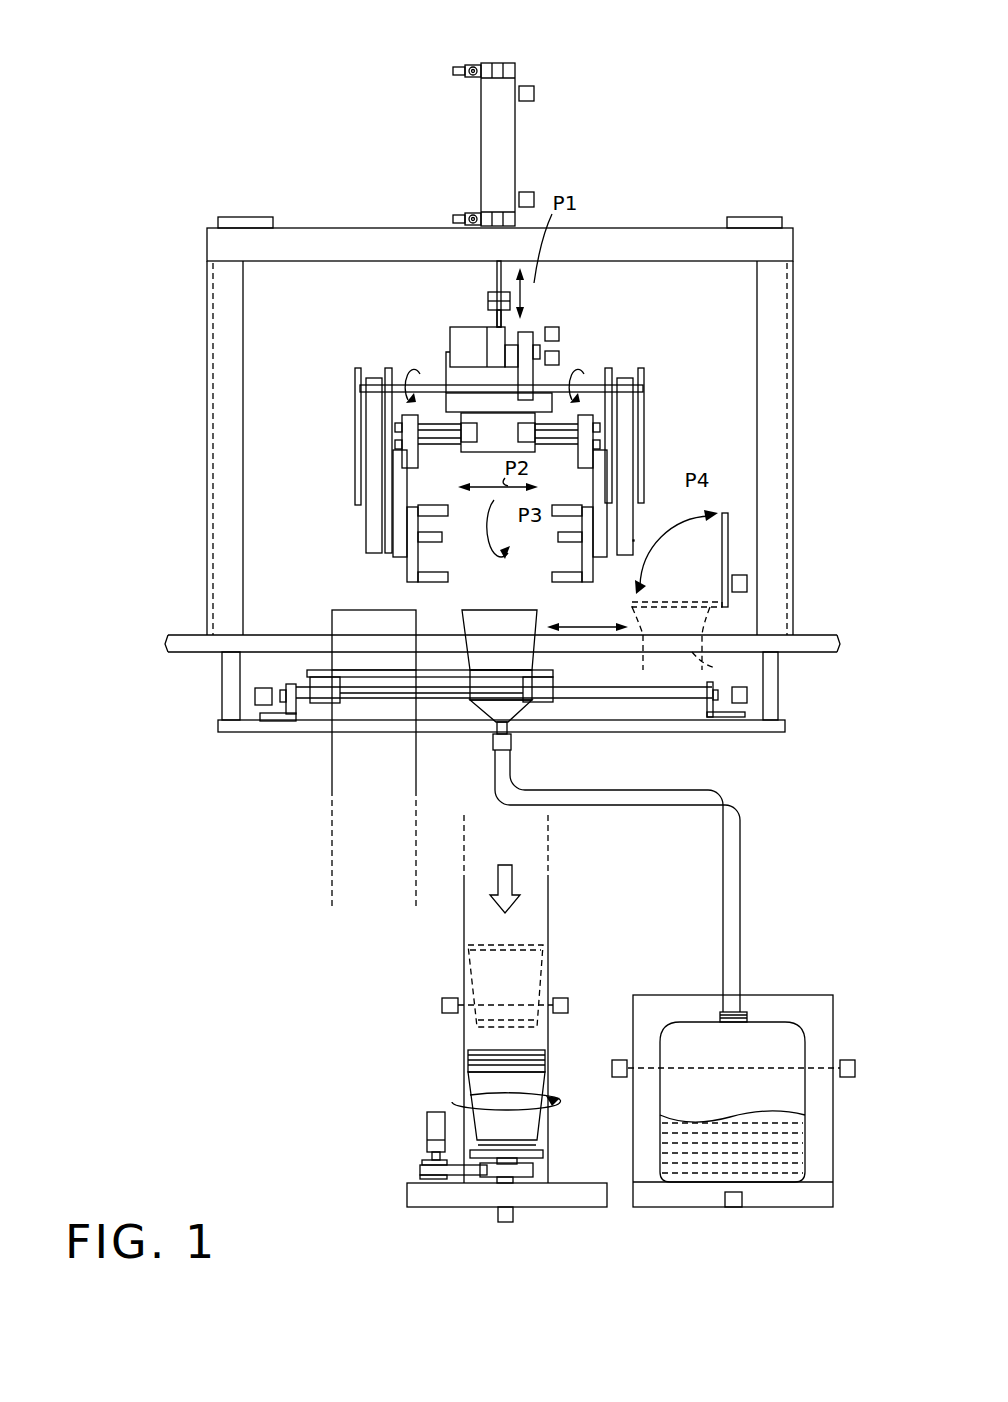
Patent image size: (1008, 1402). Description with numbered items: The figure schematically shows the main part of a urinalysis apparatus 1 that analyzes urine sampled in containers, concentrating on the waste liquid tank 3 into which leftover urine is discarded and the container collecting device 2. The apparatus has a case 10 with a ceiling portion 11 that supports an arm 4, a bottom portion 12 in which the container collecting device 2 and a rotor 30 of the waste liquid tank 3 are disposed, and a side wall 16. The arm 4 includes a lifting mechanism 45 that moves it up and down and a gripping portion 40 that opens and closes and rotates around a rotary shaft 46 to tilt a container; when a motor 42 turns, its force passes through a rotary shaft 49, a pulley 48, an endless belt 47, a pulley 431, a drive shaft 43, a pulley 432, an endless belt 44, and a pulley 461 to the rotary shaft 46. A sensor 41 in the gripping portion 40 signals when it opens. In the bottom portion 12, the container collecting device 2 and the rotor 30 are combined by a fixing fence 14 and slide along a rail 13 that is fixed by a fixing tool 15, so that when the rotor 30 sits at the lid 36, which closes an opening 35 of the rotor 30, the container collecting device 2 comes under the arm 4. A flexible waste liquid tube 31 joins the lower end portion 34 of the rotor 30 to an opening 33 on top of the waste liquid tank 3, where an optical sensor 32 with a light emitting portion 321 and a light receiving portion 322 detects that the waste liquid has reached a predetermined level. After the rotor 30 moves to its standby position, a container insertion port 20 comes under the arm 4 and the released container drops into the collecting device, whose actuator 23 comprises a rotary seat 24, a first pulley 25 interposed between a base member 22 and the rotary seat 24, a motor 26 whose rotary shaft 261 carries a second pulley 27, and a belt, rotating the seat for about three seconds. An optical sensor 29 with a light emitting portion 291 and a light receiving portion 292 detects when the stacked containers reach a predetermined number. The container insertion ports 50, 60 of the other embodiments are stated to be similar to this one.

The urinalysis apparatus 1 is at (690, 224).
The container collecting device 2 is at (332, 828).
The waste liquid tank 3 is at (803, 995).
The arm 4 is at (644, 405).
The case 10 is at (207, 318).
The ceiling portion 11 is at (298, 228).
The bottom portion 12 is at (218, 727).
The rail 13 is at (662, 690).
The fixing fence 14 is at (325, 690).
The fixing tool 15 is at (268, 722).
The side wall 16 is at (793, 318).
The container insertion port 20 is at (242, 736).
The base member 22 is at (415, 1195).
The actuator 23 is at (430, 1112).
The rotary seat 24 is at (485, 1160).
The first pulley 25 is at (520, 1177).
The motor 26 is at (430, 1118).
The rotary shaft 261 is at (432, 1155).
The second pulley 27 is at (420, 1170).
The sensor 29 is at (442, 1002).
The light emitting portion 291 is at (448, 1013).
The light receiving portion 292 is at (560, 1013).
The rotor 30 is at (540, 672).
The waste liquid tube 31 is at (740, 885).
The sensor 32 is at (848, 1060).
The light emitting portion 321 is at (620, 1077).
The light receiving portion 322 is at (848, 1077).
The opening 33 is at (723, 1012).
The lower end portion 34 is at (497, 745).
The opening 35 is at (500, 612).
The lid 36 is at (728, 540).
The gripping portion 40 is at (402, 570).
The sensor 41 is at (480, 452).
The motor 42 is at (452, 342).
The drive shaft 43 is at (608, 388).
The pulley 431 is at (558, 335).
The pulley 432 is at (644, 372).
The endless belt 44 is at (625, 378).
The lifting mechanism 45 is at (488, 288).
The rotary shaft 46 is at (612, 558).
The pulley 461 is at (633, 548).
The endless belt 47 is at (518, 335).
The pulley 48 is at (533, 340).
The rotary shaft 49 is at (500, 325).
The container insertion port 50 is at (242, 736).
The container insertion port 60 is at (332, 625).